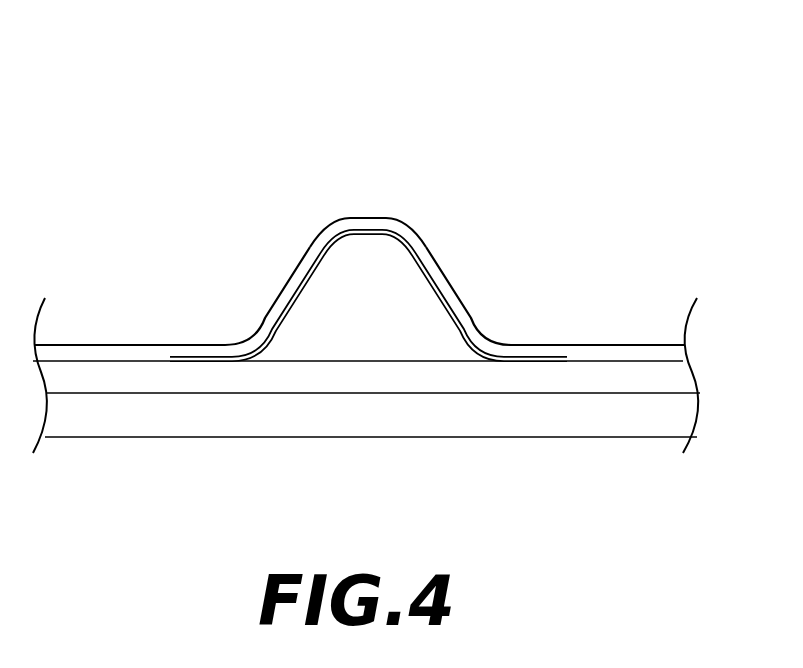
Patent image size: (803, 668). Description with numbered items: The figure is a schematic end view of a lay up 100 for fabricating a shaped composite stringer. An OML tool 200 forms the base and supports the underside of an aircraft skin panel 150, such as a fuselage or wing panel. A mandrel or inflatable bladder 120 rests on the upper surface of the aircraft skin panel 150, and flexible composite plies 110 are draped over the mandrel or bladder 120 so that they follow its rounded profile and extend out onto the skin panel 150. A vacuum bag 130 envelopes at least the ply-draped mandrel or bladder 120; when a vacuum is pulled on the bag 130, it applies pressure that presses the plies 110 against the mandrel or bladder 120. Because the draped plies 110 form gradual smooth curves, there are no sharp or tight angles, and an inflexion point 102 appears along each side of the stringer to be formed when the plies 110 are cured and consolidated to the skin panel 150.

The lay up 100 is at (643, 108).
The inflexion point 102 is at (277, 325).
The flexible composite plies 110 is at (438, 278).
The mandrel or inflatable bladder 120 is at (373, 282).
The vacuum bag 130 is at (347, 218).
The aircraft skin panel 150 is at (578, 378).
The OML tool 200 is at (542, 437).